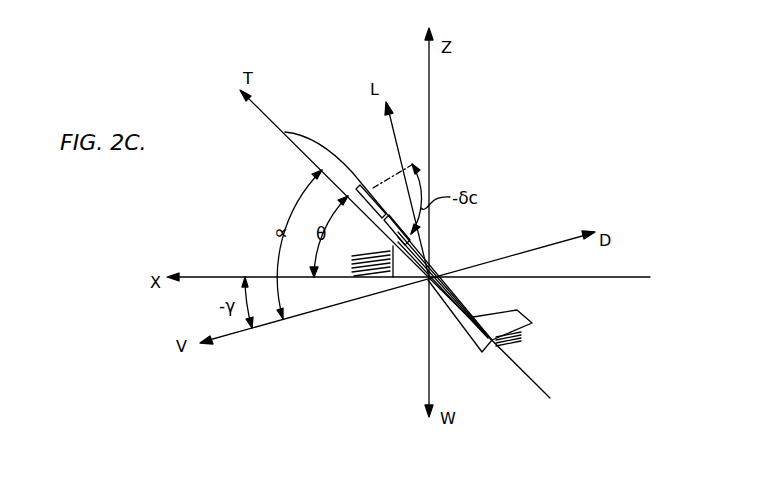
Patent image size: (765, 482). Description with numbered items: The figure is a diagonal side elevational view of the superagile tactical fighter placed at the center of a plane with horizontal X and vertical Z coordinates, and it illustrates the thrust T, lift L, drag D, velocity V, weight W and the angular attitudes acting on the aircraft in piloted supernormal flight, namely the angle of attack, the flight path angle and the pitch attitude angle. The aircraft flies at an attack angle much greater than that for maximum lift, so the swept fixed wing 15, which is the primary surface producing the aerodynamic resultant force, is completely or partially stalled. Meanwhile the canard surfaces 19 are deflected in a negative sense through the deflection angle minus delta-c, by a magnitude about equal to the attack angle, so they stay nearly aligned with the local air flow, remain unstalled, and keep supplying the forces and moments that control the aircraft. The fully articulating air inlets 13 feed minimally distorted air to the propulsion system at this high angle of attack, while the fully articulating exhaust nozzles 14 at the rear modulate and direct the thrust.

The fully articulating air inlets 13 is at (392, 256).
The fully articulating exhaust nozzles 14 is at (485, 353).
The fixed wing 15 is at (448, 288).
The canard surfaces 19 is at (380, 185).